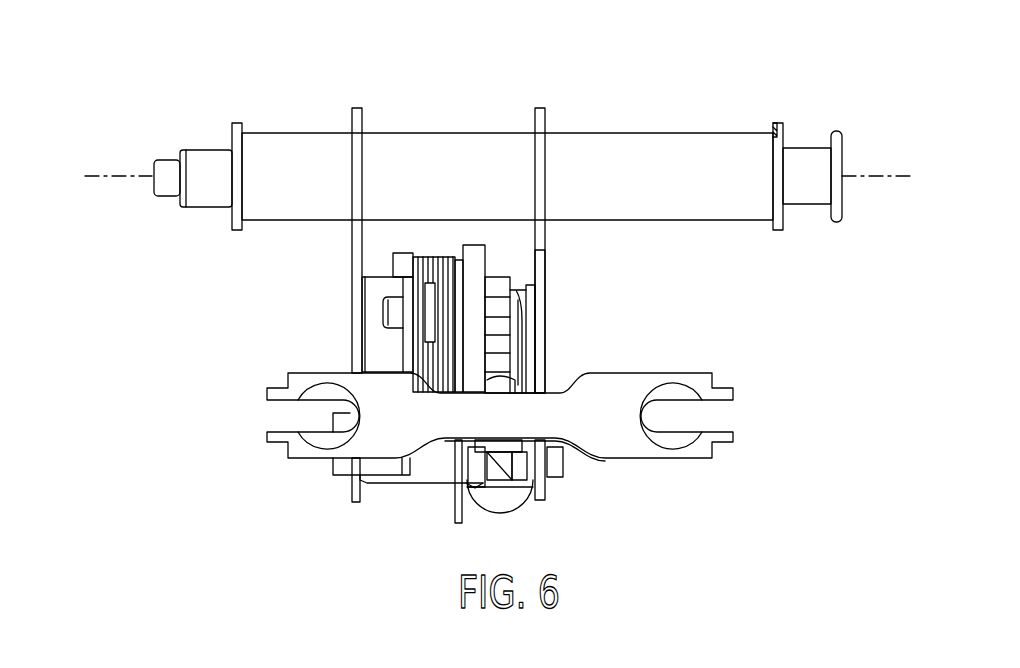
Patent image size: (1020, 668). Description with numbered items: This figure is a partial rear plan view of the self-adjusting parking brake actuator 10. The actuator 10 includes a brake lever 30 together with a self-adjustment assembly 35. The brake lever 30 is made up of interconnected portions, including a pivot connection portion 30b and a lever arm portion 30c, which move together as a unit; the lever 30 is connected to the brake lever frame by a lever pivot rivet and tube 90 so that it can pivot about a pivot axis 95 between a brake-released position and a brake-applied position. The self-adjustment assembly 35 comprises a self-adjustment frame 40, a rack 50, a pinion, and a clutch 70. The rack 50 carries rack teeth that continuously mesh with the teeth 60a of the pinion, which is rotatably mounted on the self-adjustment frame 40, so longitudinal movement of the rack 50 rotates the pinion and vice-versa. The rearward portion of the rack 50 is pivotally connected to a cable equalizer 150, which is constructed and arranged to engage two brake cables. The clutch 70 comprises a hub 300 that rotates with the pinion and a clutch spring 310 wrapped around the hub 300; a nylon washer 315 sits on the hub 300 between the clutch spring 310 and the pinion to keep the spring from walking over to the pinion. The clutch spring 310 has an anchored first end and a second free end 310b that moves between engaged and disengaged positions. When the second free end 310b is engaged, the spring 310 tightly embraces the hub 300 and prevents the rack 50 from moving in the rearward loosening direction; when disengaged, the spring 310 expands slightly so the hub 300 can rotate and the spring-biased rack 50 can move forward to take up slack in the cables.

The self-adjusting parking brake actuator 10 is at (674, 77).
The brake lever 30 is at (545, 281).
The pivot connection portion 30b is at (298, 132).
The lever arm portion 30c is at (357, 107).
The self-adjustment assembly 35 is at (412, 495).
The self-adjustment frame 40 is at (402, 291).
The rack 50 is at (503, 384).
The teeth of the pinion 60a is at (498, 276).
The clutch 70 is at (419, 249).
The lever pivot rivet and tube 90 is at (803, 147).
The pivot axis 95 is at (885, 179).
The cable equalizer 150 is at (705, 459).
The hub 300 is at (455, 254).
The clutch spring 310 is at (435, 255).
The second free end 310b is at (460, 513).
The nylon washer 315 is at (478, 252).